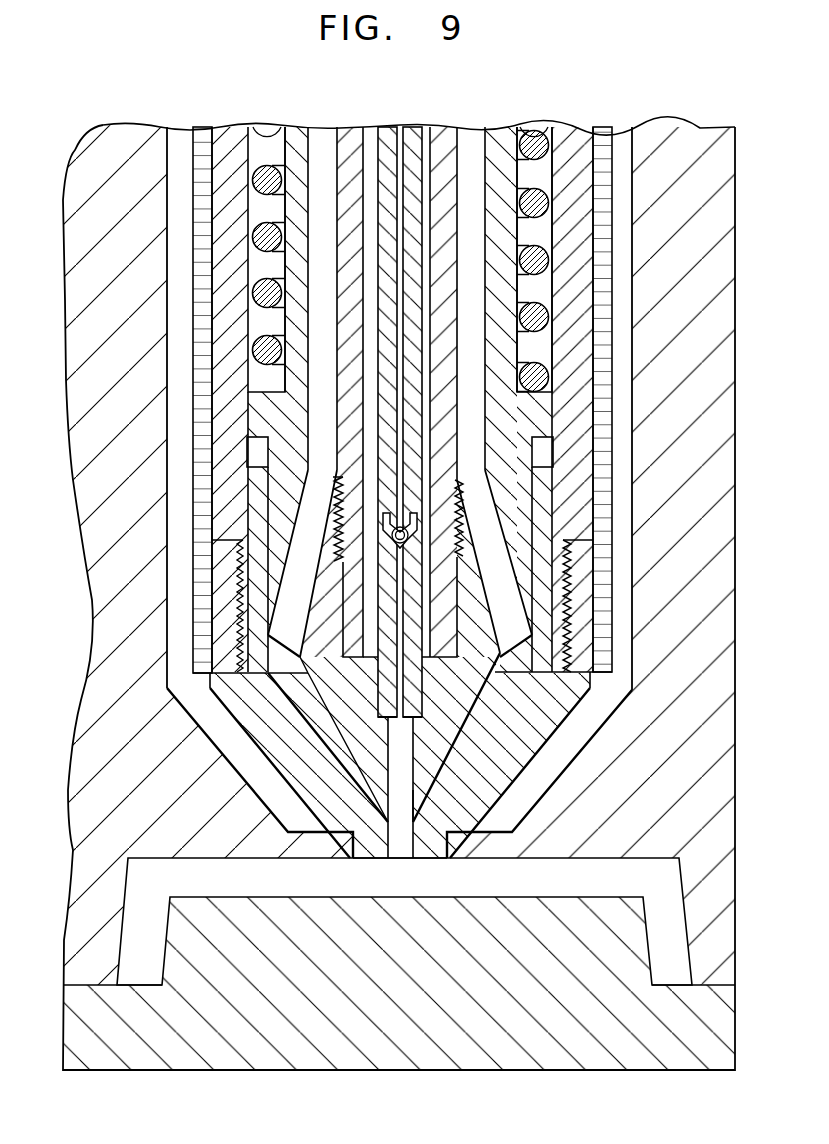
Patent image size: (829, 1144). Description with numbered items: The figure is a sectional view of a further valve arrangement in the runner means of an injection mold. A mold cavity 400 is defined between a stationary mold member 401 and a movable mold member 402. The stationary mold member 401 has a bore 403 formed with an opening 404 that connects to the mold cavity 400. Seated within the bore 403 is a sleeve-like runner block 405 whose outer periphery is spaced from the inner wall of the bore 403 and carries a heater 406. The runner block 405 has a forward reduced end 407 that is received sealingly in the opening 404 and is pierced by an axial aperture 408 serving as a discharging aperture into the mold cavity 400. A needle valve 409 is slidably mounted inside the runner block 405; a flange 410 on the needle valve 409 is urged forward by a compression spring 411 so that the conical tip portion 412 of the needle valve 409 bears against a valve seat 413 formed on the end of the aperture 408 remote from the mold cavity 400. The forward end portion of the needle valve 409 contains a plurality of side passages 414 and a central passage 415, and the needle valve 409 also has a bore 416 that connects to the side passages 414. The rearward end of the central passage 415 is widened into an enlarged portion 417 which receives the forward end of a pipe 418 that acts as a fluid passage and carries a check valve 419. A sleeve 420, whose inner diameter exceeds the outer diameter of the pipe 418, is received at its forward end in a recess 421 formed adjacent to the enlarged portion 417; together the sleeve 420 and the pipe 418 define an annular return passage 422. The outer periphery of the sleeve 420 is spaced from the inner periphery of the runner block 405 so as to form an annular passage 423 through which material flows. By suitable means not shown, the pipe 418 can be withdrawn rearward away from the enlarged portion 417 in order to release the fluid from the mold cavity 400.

The mold cavity 400 is at (440, 890).
The stationary mold member 401 is at (85, 727).
The movable mold member 402 is at (391, 1063).
The bore 403 is at (170, 262).
The opening 404 is at (355, 846).
The runner block 405 is at (230, 140).
The heater 406 is at (197, 152).
The forward reduced end 407 is at (443, 852).
The axial aperture 408 is at (397, 858).
The needle valve 409 is at (498, 142).
The flange 410 is at (543, 410).
The compression spring 411 is at (538, 140).
The conical tip portion 412 is at (418, 802).
The valve seat 413 is at (467, 700).
The side passages 414 is at (303, 551).
The central passage 415 is at (407, 748).
The bore 416 is at (316, 148).
The enlarged portion 417 is at (385, 678).
The pipe 418 is at (412, 138).
The check valve 419 is at (395, 537).
The sleeve 420 is at (442, 138).
The recess 421 is at (457, 619).
The return passage 422 is at (370, 137).
The annular passage 423 is at (472, 140).